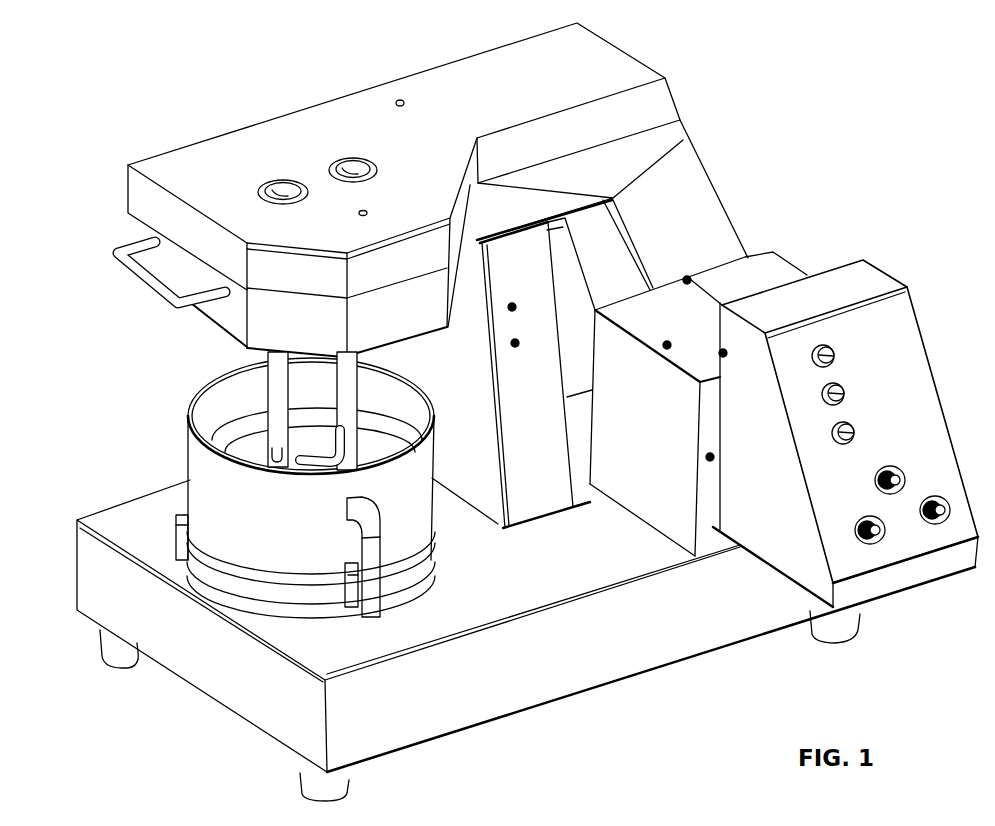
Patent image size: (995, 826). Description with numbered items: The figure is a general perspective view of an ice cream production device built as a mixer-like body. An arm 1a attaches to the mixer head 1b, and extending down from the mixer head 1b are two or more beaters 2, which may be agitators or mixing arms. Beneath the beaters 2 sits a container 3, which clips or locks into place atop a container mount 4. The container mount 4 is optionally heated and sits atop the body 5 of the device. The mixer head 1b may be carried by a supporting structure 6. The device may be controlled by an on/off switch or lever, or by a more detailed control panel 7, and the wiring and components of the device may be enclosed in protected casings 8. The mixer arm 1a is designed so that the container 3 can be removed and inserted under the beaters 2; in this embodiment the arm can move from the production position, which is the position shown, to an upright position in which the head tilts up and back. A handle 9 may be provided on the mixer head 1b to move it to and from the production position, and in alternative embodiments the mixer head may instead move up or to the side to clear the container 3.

The arm 1a is at (722, 218).
The mixer head 1b is at (286, 116).
The beaters 2 is at (337, 385).
The container 3 is at (188, 445).
The container mount 4 is at (180, 553).
The body 5 is at (208, 706).
The supporting structure 6 is at (580, 480).
The control panel 7 is at (911, 518).
The protected casings 8 is at (913, 308).
The handle 9 is at (108, 262).